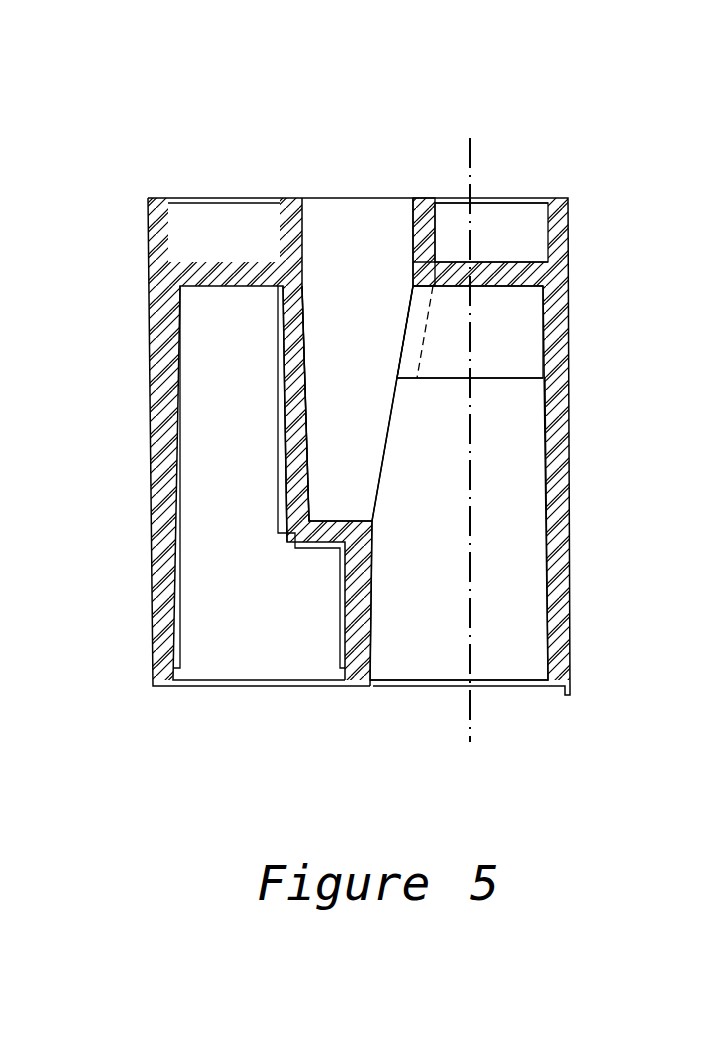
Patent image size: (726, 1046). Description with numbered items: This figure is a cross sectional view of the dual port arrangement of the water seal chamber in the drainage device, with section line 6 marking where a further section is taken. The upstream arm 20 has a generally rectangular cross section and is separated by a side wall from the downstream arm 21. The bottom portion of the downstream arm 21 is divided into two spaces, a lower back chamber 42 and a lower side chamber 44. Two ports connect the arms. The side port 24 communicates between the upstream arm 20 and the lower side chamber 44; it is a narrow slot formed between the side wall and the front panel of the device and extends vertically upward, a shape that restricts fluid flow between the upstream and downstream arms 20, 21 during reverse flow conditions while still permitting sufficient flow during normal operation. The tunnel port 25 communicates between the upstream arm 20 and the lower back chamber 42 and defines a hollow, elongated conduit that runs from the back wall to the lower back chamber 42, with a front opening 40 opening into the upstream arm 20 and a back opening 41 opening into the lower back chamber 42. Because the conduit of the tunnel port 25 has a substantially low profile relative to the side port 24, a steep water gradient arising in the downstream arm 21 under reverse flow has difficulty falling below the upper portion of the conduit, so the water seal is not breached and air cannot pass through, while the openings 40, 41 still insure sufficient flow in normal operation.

The section line 6- 6 is at (430, 742).
The upstream arm 20 is at (512, 223).
The downstream arm 21 is at (340, 259).
The side port 24 is at (413, 242).
The tunnel port 25 is at (505, 338).
The front opening 40 is at (482, 278).
The back opening 41 is at (505, 380).
The lower back chamber 42 is at (505, 555).
The lower side chamber 44 is at (335, 383).